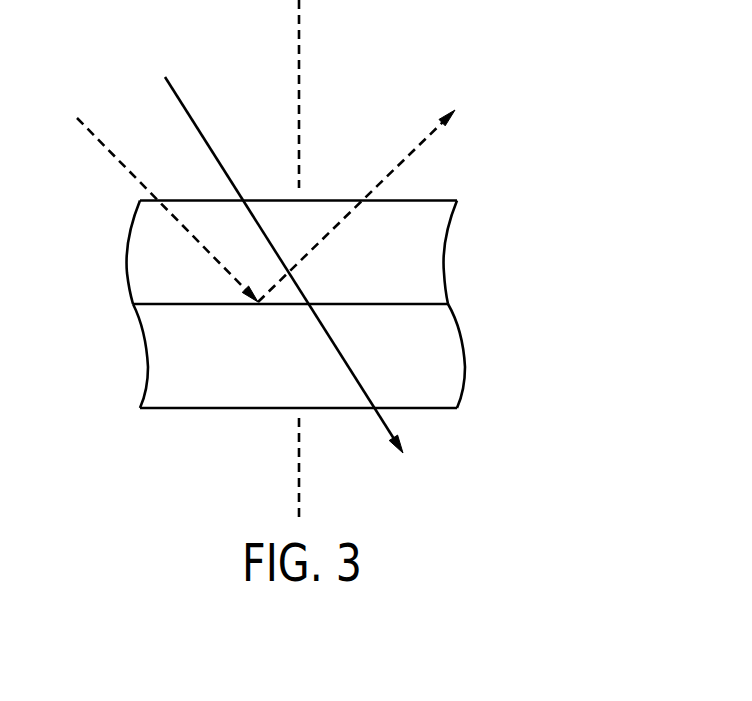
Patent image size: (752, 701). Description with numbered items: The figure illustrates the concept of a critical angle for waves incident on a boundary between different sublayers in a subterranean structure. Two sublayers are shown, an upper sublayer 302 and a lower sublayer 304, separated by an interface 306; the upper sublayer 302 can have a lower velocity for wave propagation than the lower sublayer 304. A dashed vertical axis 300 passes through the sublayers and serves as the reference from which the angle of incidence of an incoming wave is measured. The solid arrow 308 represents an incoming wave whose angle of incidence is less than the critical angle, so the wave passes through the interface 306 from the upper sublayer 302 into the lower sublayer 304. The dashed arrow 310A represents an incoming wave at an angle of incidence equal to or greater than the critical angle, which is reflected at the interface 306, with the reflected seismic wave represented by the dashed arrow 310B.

The vertical axis 300 is at (300, 37).
The upper sublayer 302 is at (425, 263).
The lower sublayer 304 is at (425, 363).
The interface 306 is at (423, 303).
The solid arrow 308 is at (193, 115).
The dashed arrow 310A is at (93, 133).
The reflected seismic wave 310B is at (430, 135).